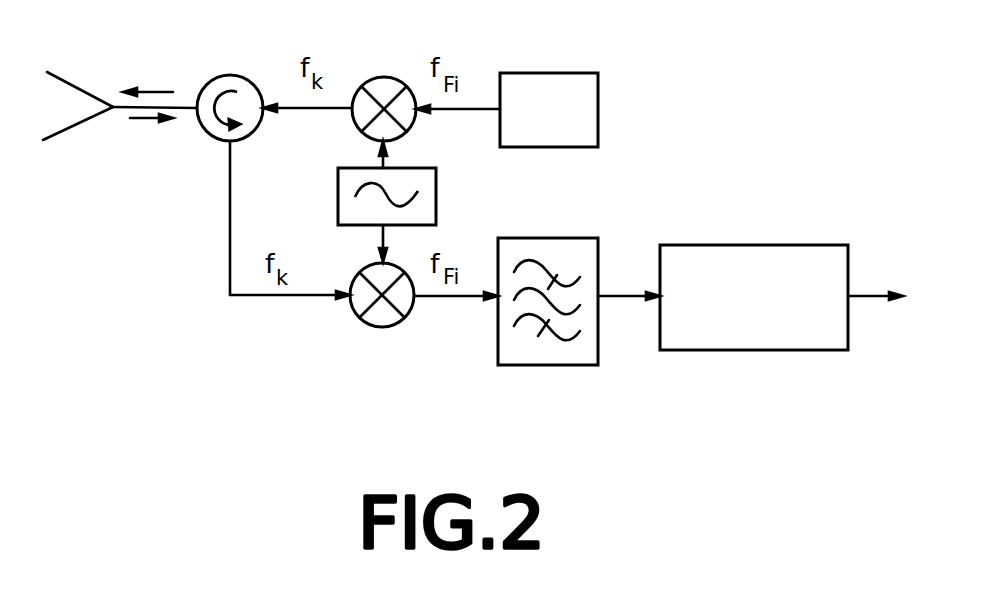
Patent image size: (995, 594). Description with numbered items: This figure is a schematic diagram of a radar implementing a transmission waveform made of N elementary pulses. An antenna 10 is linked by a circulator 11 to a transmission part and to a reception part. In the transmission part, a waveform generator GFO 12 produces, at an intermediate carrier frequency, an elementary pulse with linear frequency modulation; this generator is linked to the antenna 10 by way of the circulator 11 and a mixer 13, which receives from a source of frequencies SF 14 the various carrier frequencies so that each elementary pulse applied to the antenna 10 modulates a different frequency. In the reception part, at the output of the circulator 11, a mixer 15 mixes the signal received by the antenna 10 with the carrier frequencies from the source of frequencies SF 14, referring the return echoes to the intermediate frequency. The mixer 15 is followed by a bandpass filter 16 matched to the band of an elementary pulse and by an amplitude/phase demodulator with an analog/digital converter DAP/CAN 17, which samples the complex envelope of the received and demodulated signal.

The antenna 10 is at (70, 77).
The circulator 11 is at (230, 76).
The waveform generator GFO 12 is at (549, 73).
The mixer 13 is at (385, 76).
The source of frequencies SF 14 is at (338, 195).
The mixer 15 is at (358, 323).
The bandpass filter 16 is at (547, 365).
The amplitude/phase demodulator associated with an analog/digital converter DAP/CAN 17 is at (743, 245).